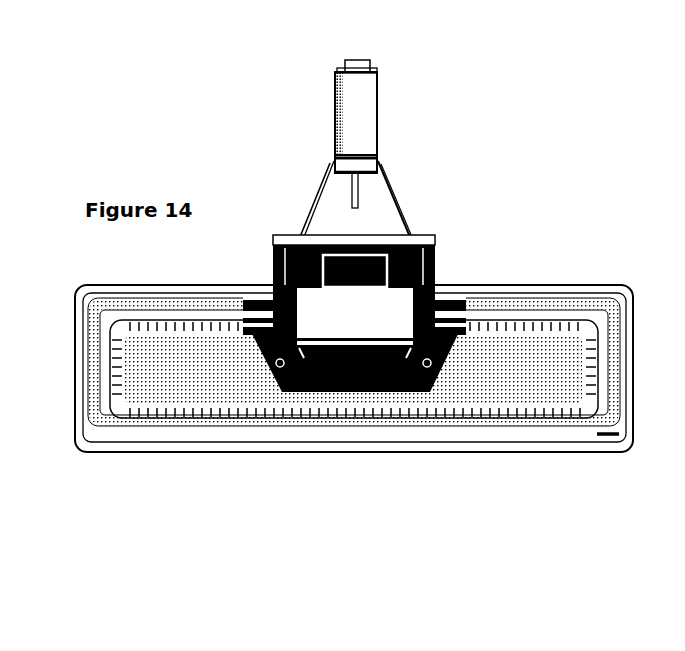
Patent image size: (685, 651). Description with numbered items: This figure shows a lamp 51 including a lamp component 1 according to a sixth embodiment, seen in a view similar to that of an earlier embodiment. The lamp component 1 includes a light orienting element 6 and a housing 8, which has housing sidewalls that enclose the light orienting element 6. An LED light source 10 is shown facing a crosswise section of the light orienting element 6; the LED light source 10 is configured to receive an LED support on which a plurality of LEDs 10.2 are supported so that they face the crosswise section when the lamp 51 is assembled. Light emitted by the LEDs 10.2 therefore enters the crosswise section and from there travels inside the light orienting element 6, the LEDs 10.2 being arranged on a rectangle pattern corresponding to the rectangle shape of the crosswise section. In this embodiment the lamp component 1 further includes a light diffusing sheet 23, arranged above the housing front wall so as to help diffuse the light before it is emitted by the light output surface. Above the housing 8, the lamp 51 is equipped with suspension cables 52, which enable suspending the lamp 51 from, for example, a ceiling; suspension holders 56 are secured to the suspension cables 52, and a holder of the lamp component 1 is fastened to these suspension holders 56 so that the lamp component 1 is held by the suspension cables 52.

The lamp component 1 is at (246, 242).
The light orienting element 6 is at (585, 335).
The housing 8 is at (628, 347).
The LED light source 10 is at (518, 322).
The LEDs 10.2 is at (517, 327).
The light diffusing sheet 23 is at (620, 430).
The lamp 51 is at (246, 122).
The suspension cables 52 is at (355, 58).
The suspension holders 56 is at (442, 266).